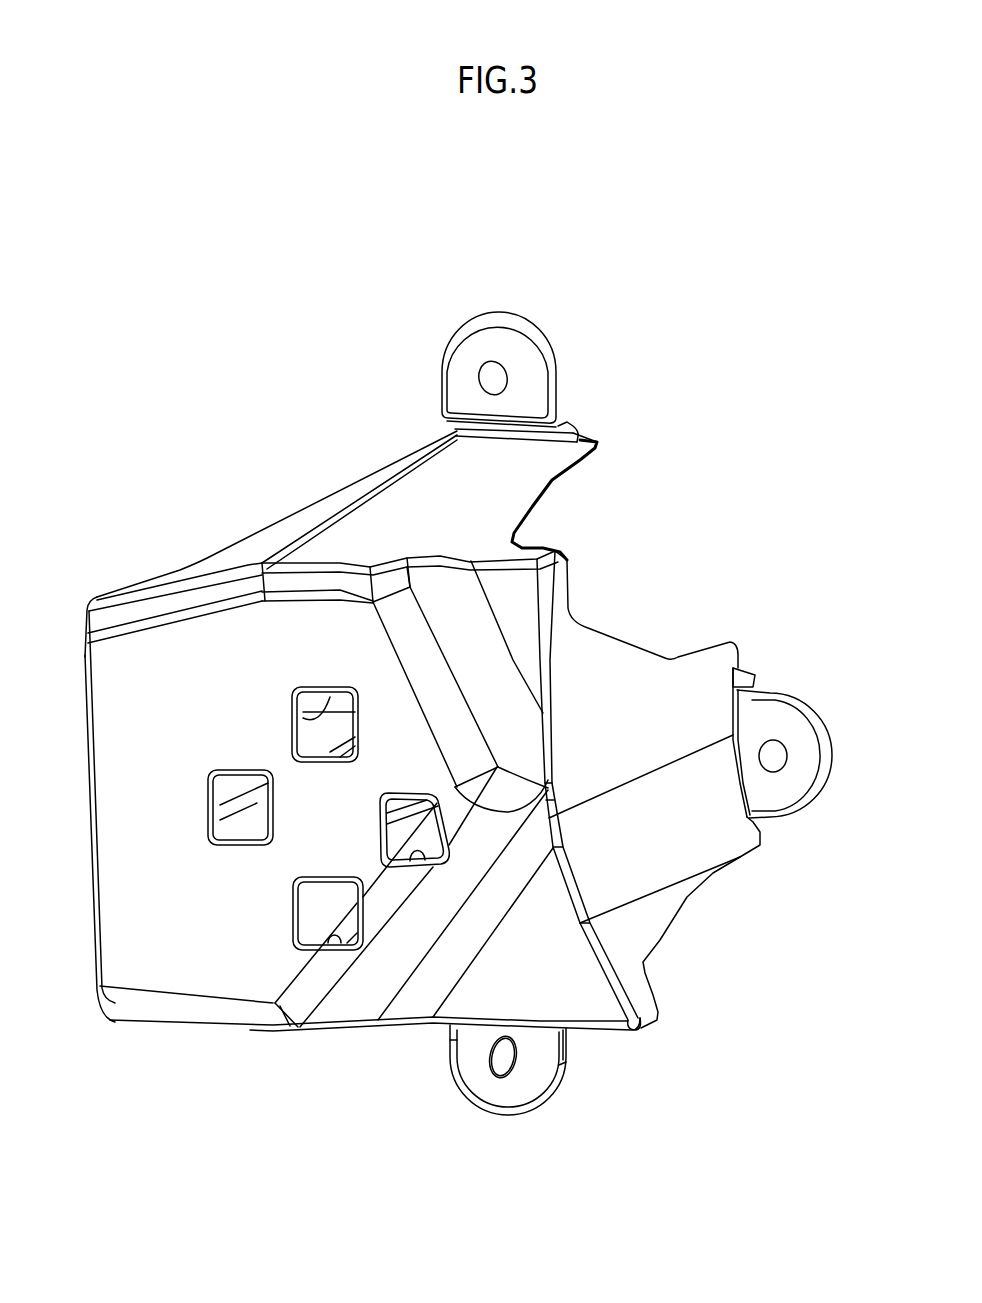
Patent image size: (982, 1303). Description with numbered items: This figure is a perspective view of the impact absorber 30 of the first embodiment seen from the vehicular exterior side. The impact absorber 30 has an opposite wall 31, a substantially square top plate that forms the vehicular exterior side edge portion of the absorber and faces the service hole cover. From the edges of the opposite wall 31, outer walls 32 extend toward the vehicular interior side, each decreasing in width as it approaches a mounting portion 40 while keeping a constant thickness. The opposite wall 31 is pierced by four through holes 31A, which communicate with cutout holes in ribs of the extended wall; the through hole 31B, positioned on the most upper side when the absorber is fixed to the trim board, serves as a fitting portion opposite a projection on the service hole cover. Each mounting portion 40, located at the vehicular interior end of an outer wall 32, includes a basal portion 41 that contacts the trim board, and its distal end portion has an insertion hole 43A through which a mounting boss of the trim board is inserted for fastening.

The impact absorber 30 is at (253, 422).
The opposite wall 31 is at (162, 958).
The through holes 31A is at (270, 826).
The through hole 31B is at (300, 718).
The outer walls 32 is at (410, 503).
The mounting portion 40 is at (468, 348).
The basal portion 41 is at (577, 424).
The insertion hole 43A is at (488, 388).